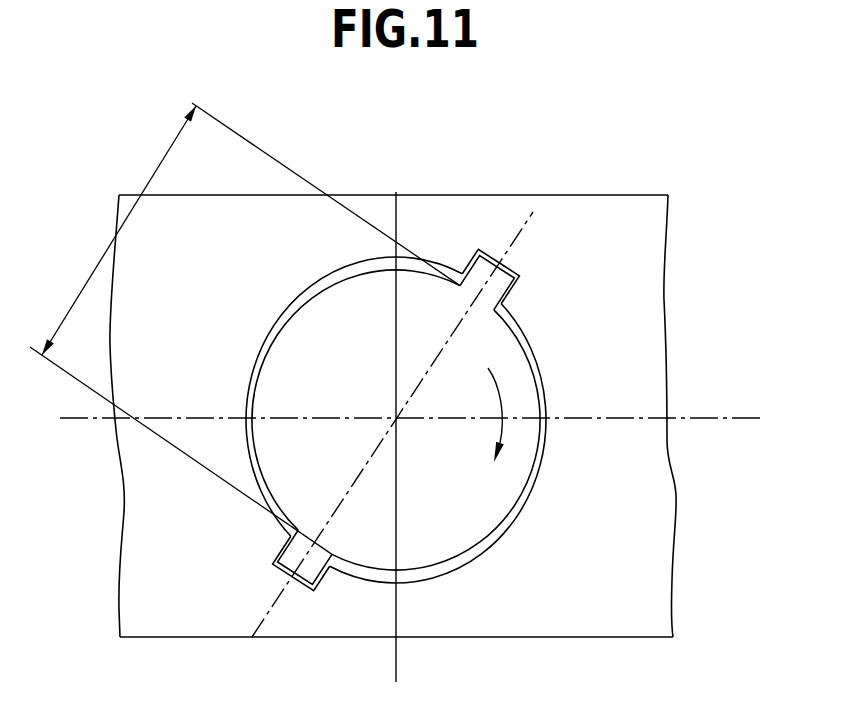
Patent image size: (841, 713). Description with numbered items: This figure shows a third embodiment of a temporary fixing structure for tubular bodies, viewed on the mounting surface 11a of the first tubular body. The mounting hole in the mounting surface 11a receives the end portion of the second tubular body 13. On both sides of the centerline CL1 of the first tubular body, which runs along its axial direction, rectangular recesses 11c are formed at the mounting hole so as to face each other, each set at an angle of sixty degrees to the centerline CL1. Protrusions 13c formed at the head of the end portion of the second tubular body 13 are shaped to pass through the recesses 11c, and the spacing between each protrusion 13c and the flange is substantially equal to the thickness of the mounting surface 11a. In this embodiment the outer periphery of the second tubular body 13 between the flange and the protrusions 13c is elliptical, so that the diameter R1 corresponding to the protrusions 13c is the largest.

The mounting surface 11a is at (622, 285).
The recess 11c is at (513, 265).
The second tubular body 13 is at (417, 251).
The protrusion 13c is at (490, 258).
The diameter R1 is at (245, 328).
The centerline CL1 is at (605, 417).